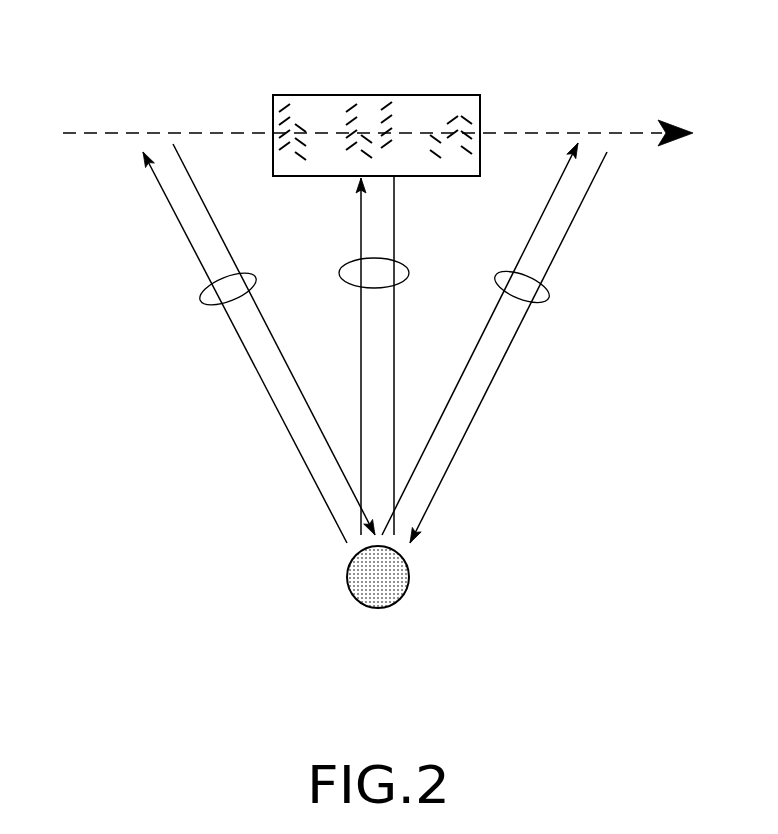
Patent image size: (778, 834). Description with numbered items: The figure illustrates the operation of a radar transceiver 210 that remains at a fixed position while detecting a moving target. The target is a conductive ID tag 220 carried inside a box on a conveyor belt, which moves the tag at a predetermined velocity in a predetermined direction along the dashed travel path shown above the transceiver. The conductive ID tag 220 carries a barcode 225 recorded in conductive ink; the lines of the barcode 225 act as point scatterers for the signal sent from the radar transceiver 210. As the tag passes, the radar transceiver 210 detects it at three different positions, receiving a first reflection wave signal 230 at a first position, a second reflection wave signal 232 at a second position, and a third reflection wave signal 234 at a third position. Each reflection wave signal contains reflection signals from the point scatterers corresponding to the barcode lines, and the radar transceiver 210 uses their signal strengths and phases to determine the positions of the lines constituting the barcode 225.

The radar transceiver 210 is at (410, 575).
The conductive ID tag 220 is at (415, 95).
The barcode 225 is at (352, 107).
The first reflection wave signal 230 is at (200, 298).
The second reflection wave signal 232 is at (409, 268).
The third reflection wave signal 234 is at (548, 298).